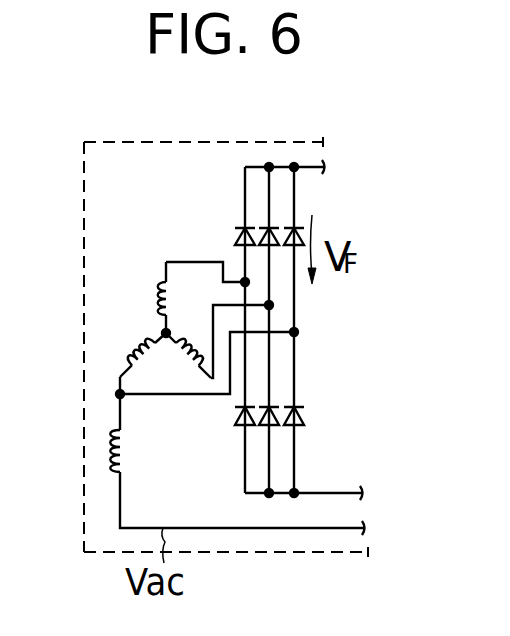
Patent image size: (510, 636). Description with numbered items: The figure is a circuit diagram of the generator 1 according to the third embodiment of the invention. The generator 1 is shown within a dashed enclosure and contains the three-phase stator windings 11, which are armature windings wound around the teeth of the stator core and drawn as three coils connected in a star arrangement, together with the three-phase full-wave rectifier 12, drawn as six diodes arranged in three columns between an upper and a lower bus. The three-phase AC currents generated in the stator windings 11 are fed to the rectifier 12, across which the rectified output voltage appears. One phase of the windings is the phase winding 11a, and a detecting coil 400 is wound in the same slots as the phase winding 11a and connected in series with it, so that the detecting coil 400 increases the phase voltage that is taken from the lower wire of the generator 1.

The generator 1 is at (238, 552).
The three-phase stator windings 11 is at (152, 281).
The phase winding 11a is at (138, 348).
The three-phase full-wave rectifier 12 is at (237, 236).
The detecting coil 400 is at (132, 453).